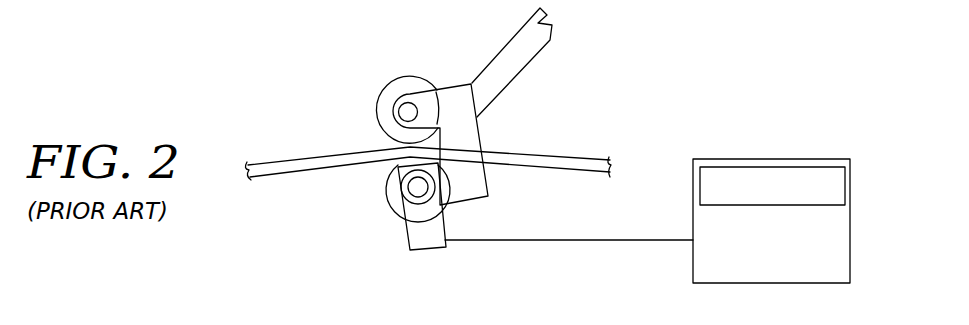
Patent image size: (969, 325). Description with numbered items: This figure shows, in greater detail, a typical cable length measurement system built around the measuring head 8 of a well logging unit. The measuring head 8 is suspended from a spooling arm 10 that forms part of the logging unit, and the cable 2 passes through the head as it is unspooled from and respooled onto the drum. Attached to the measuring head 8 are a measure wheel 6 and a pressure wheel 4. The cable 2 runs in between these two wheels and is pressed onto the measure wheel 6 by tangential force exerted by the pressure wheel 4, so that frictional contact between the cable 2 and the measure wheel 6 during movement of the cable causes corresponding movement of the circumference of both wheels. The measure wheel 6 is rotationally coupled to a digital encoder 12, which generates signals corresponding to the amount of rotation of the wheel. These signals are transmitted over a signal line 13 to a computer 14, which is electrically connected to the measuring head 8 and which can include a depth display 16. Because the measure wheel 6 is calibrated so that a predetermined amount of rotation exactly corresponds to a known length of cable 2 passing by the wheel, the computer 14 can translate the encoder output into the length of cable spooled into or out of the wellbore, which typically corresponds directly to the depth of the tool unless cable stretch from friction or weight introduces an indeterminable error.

The cable 2 is at (300, 158).
The pressure wheel 4 is at (386, 87).
The measure wheel 6 is at (395, 210).
The measuring head 8 is at (453, 83).
The spooling arm 10 is at (522, 70).
The digital encoder 12 is at (428, 252).
The signal line 13 is at (552, 240).
The computer 14 is at (850, 237).
The depth display 16 is at (845, 183).